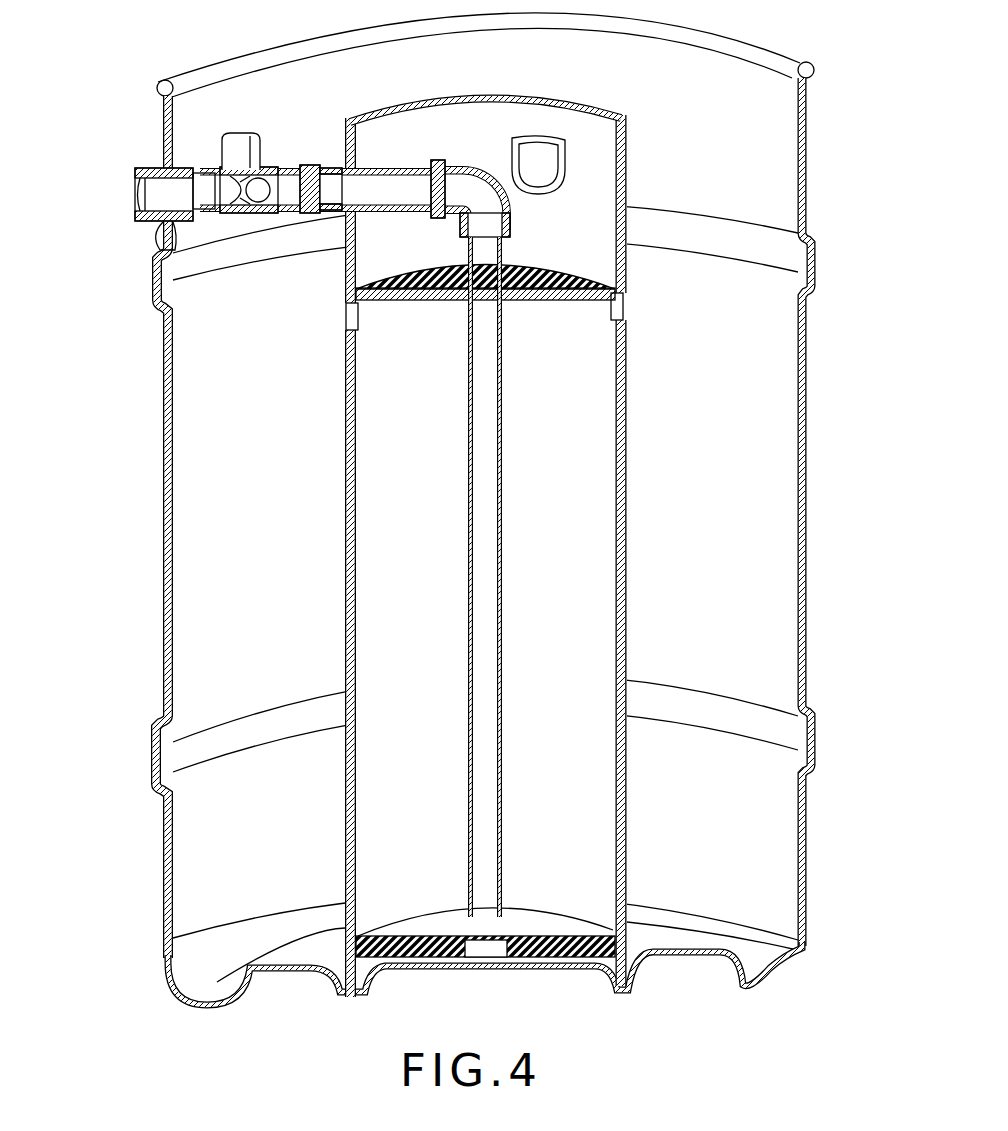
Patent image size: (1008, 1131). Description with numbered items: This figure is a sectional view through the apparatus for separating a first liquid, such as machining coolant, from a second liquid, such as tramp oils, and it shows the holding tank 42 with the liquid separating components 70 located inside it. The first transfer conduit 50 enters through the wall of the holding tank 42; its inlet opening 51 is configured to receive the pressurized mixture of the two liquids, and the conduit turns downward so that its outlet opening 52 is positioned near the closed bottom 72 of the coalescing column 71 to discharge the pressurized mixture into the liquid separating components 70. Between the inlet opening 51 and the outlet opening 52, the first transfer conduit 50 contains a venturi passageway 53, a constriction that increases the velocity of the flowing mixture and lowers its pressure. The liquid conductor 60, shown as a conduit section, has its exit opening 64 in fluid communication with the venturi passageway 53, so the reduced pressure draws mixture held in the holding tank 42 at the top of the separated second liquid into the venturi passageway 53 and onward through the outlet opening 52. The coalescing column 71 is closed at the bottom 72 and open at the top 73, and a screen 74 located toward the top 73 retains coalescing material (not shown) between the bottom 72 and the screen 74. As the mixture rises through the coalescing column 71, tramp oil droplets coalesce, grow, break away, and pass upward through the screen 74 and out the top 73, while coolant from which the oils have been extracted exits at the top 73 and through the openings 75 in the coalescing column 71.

The holding tank 42 is at (808, 482).
The first transfer conduit 50 is at (303, 495).
The inlet opening 51 is at (137, 193).
The outlet opening 52 is at (492, 912).
The venturi passageway 53 is at (167, 257).
The liquid conductor 60 is at (241, 140).
The exit opening 64 is at (230, 188).
The liquid separating components 70 is at (419, 524).
The coalescing column 71 is at (345, 432).
The bottom 72 is at (381, 940).
The top 73 is at (485, 94).
The screen 74 is at (527, 268).
The openings 75 is at (346, 306).